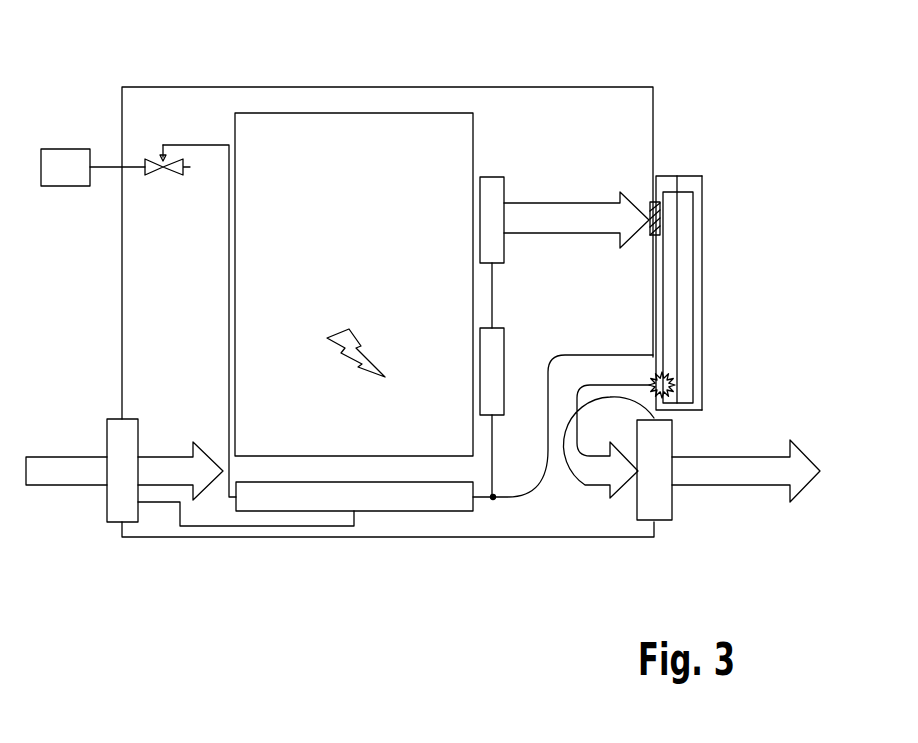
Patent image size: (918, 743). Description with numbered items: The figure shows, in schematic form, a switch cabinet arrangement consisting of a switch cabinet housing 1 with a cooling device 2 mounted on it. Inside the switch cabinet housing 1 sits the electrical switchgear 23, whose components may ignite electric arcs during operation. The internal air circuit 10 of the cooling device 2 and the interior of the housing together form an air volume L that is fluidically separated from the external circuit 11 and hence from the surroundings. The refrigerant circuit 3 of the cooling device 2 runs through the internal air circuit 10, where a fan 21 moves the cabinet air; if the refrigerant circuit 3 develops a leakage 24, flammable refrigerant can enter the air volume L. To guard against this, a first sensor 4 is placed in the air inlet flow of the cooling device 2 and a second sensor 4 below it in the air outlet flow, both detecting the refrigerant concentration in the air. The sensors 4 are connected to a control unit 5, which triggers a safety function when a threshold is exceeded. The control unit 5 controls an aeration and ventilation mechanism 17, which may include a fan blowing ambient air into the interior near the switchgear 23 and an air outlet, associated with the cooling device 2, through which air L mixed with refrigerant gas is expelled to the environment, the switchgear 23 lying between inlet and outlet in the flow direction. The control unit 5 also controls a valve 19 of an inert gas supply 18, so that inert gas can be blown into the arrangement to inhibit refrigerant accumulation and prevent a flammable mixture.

The switch cabinet housing 1 is at (524, 87).
The cooling device 2 is at (700, 176).
The refrigerant circuit 3 is at (694, 262).
The refrigerant sensor 4 is at (480, 218).
The control unit 5 is at (436, 495).
The internal air circuit 10 is at (670, 186).
The external circuit 11 is at (699, 300).
The aeration and ventilation mechanism 17 is at (107, 430).
The inert gas supply 18 is at (65, 180).
The valve 19 is at (150, 176).
The fan 21 is at (650, 204).
The electrical switchgear 23 is at (358, 142).
The leakage 24 is at (676, 385).
The air volume L is at (189, 118).